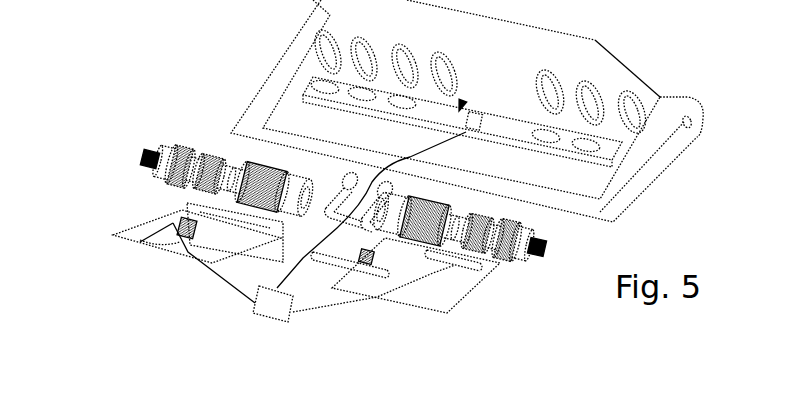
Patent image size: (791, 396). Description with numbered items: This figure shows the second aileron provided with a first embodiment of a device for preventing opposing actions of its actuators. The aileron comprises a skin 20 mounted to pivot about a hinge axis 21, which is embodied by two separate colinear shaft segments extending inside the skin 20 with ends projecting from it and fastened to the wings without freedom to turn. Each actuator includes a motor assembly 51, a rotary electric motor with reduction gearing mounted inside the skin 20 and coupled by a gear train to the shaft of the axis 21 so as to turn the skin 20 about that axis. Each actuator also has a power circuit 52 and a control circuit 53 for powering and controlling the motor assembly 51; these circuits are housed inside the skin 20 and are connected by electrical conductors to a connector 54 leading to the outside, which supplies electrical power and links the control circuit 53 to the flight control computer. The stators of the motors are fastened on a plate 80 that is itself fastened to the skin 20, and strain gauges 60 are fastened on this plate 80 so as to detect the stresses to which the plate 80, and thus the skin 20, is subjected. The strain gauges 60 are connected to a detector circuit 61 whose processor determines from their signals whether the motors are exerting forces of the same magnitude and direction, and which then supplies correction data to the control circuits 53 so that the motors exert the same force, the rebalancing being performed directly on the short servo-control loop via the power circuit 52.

The skin 20 is at (645, 167).
The hinge axis 21 is at (153, 156).
The motor assembly 51 is at (263, 160).
The power circuit 52 is at (208, 213).
The control circuit 53 is at (185, 215).
The connector 54 is at (345, 172).
The strain gauges 60 is at (476, 117).
The detector circuit 61 is at (257, 305).
The plate 80 is at (461, 108).